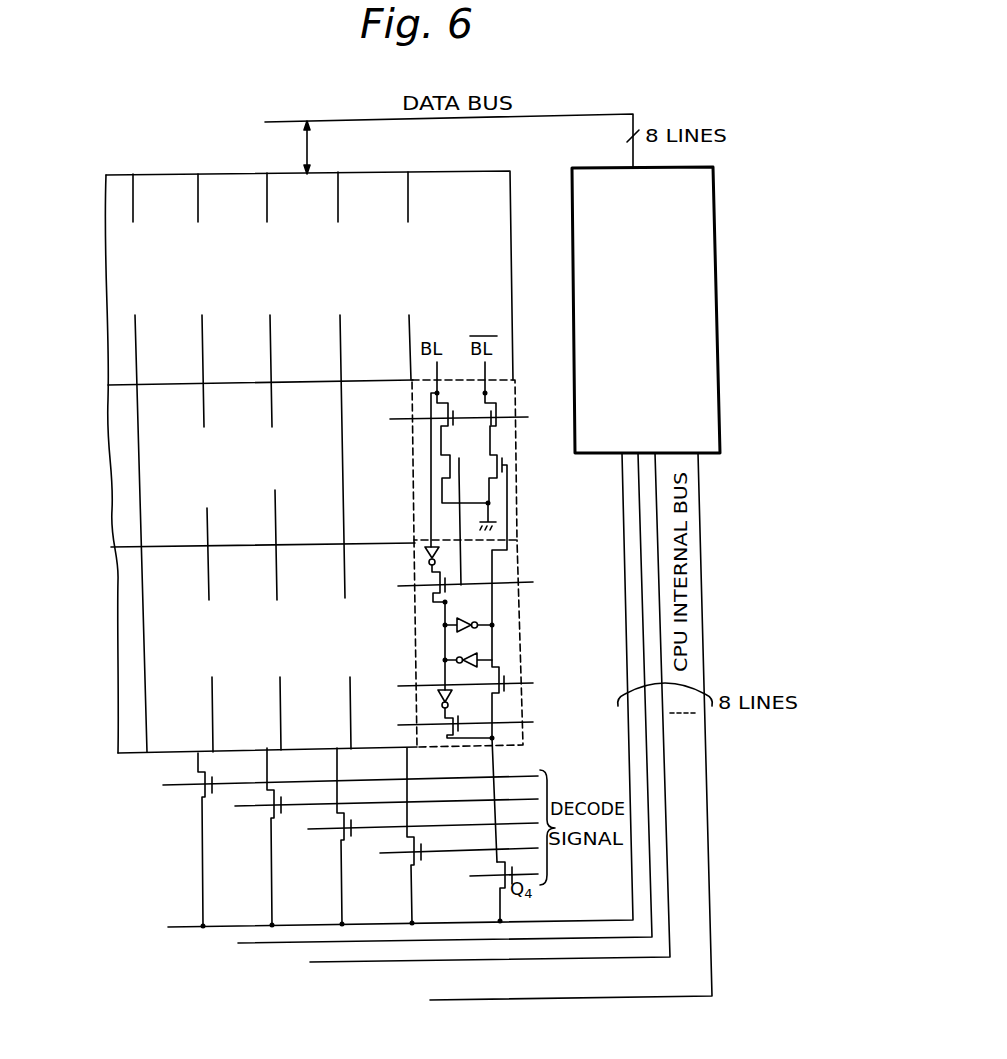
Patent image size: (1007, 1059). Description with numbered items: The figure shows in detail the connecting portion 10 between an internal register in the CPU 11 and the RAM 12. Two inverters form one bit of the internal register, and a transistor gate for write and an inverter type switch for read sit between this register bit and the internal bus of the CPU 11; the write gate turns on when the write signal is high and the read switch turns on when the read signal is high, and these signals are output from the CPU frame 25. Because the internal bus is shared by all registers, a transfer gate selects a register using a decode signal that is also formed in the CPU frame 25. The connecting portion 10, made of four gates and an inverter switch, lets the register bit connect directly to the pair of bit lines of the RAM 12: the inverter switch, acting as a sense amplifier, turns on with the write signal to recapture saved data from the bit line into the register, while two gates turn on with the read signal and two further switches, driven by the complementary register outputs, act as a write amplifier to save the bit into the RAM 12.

The connecting portion 10 is at (517, 484).
The CPU 11 is at (523, 632).
The RAM 12 is at (513, 284).
The CPU frame 25 is at (718, 326).